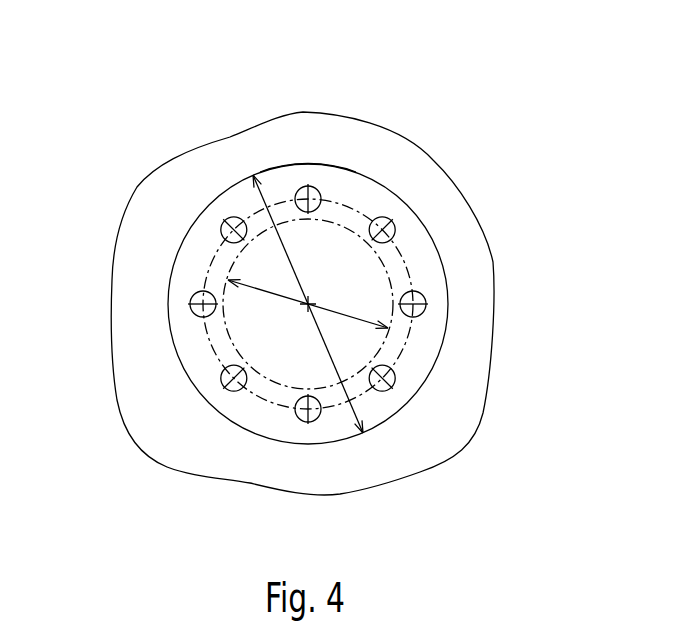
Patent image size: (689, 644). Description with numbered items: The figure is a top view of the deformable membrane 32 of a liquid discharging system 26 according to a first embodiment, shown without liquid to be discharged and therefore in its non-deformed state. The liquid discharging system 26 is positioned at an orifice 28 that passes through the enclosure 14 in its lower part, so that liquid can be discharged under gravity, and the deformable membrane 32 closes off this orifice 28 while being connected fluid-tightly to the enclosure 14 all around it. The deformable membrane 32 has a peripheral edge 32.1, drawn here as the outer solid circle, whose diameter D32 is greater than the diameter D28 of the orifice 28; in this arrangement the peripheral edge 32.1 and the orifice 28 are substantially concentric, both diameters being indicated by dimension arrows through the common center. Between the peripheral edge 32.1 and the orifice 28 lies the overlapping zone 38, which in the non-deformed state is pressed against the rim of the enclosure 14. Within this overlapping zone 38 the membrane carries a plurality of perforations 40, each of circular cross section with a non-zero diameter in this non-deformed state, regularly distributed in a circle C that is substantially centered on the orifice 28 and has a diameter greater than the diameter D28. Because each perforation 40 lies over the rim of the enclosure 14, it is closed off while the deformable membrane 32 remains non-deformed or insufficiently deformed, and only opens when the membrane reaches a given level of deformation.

The enclosure 14 is at (313, 312).
The liquid discharging system 26 is at (480, 140).
The orifice 28 is at (249, 393).
The deformable membrane 32 is at (263, 152).
The peripheral edge 32.1 is at (327, 165).
The overlapping zone 38 is at (312, 284).
The perforation 40 is at (415, 292).
The circle C is at (217, 347).
The diameter of the peripheral edge D32 is at (308, 304).
The diameter of the orifice D28 is at (308, 304).